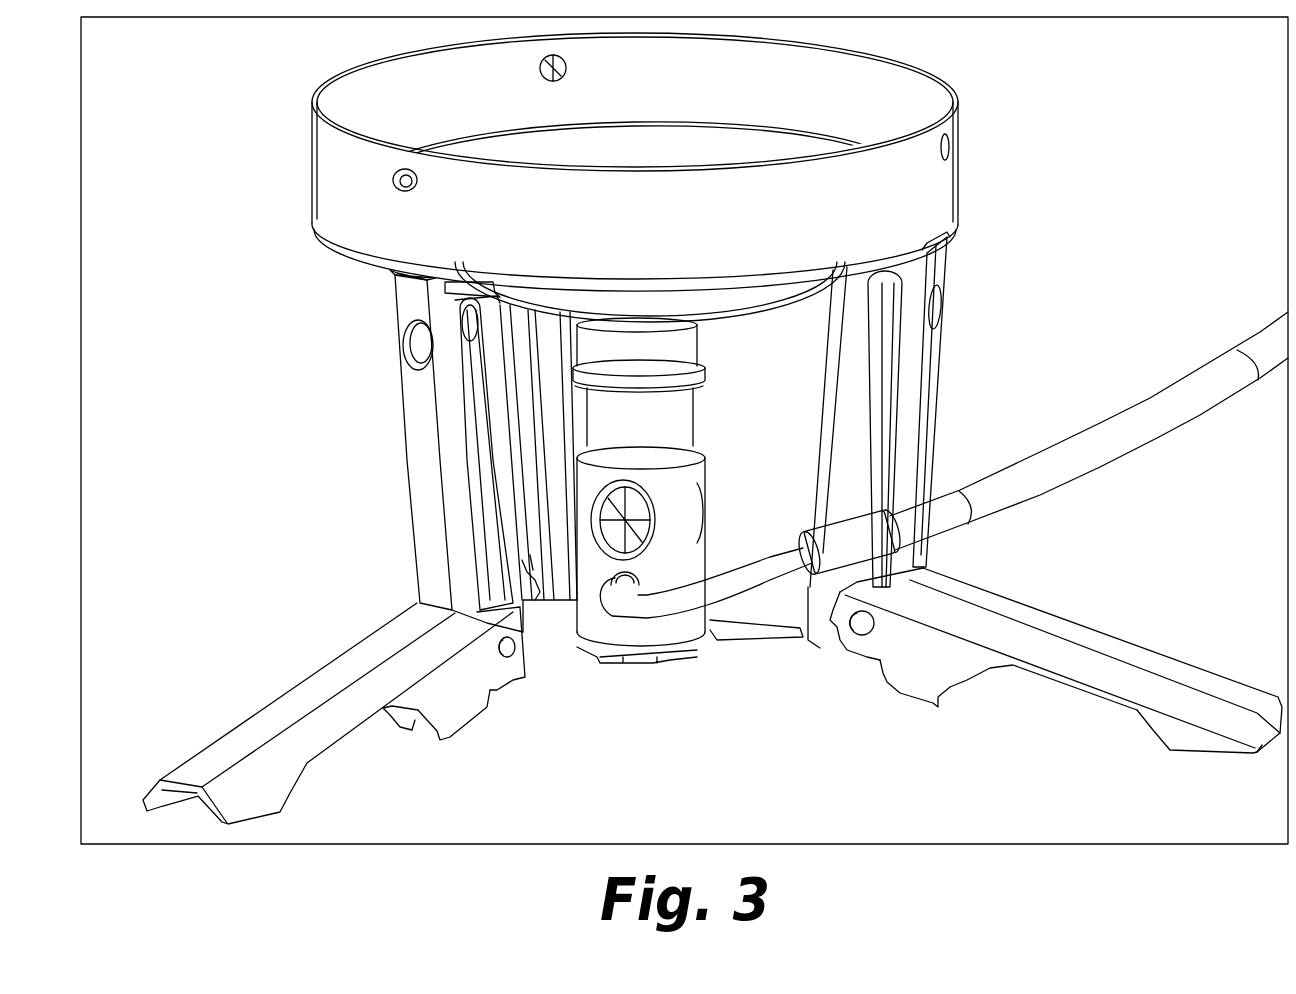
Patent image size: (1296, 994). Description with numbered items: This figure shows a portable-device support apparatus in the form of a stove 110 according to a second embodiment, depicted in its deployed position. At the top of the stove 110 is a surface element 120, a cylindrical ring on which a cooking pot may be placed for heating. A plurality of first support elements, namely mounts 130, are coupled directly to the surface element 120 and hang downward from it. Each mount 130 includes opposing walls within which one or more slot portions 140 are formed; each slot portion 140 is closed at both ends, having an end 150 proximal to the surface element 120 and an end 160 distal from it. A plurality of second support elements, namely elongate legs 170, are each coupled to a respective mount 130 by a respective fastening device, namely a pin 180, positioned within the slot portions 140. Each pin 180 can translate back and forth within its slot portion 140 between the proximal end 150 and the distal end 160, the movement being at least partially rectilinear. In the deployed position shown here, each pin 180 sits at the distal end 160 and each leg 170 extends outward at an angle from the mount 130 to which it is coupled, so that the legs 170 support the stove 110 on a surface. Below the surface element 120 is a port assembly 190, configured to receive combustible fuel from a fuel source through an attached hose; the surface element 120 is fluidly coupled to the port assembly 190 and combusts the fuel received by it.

The stove 110 is at (197, 120).
The surface element 120 is at (656, 234).
The mount 130 is at (422, 461).
The slot portion 140 is at (487, 513).
The proximal end 150 is at (458, 308).
The distal end 160 is at (488, 592).
The elongate leg 170 is at (268, 721).
The pin 180 is at (523, 657).
The port assembly 190 is at (617, 637).